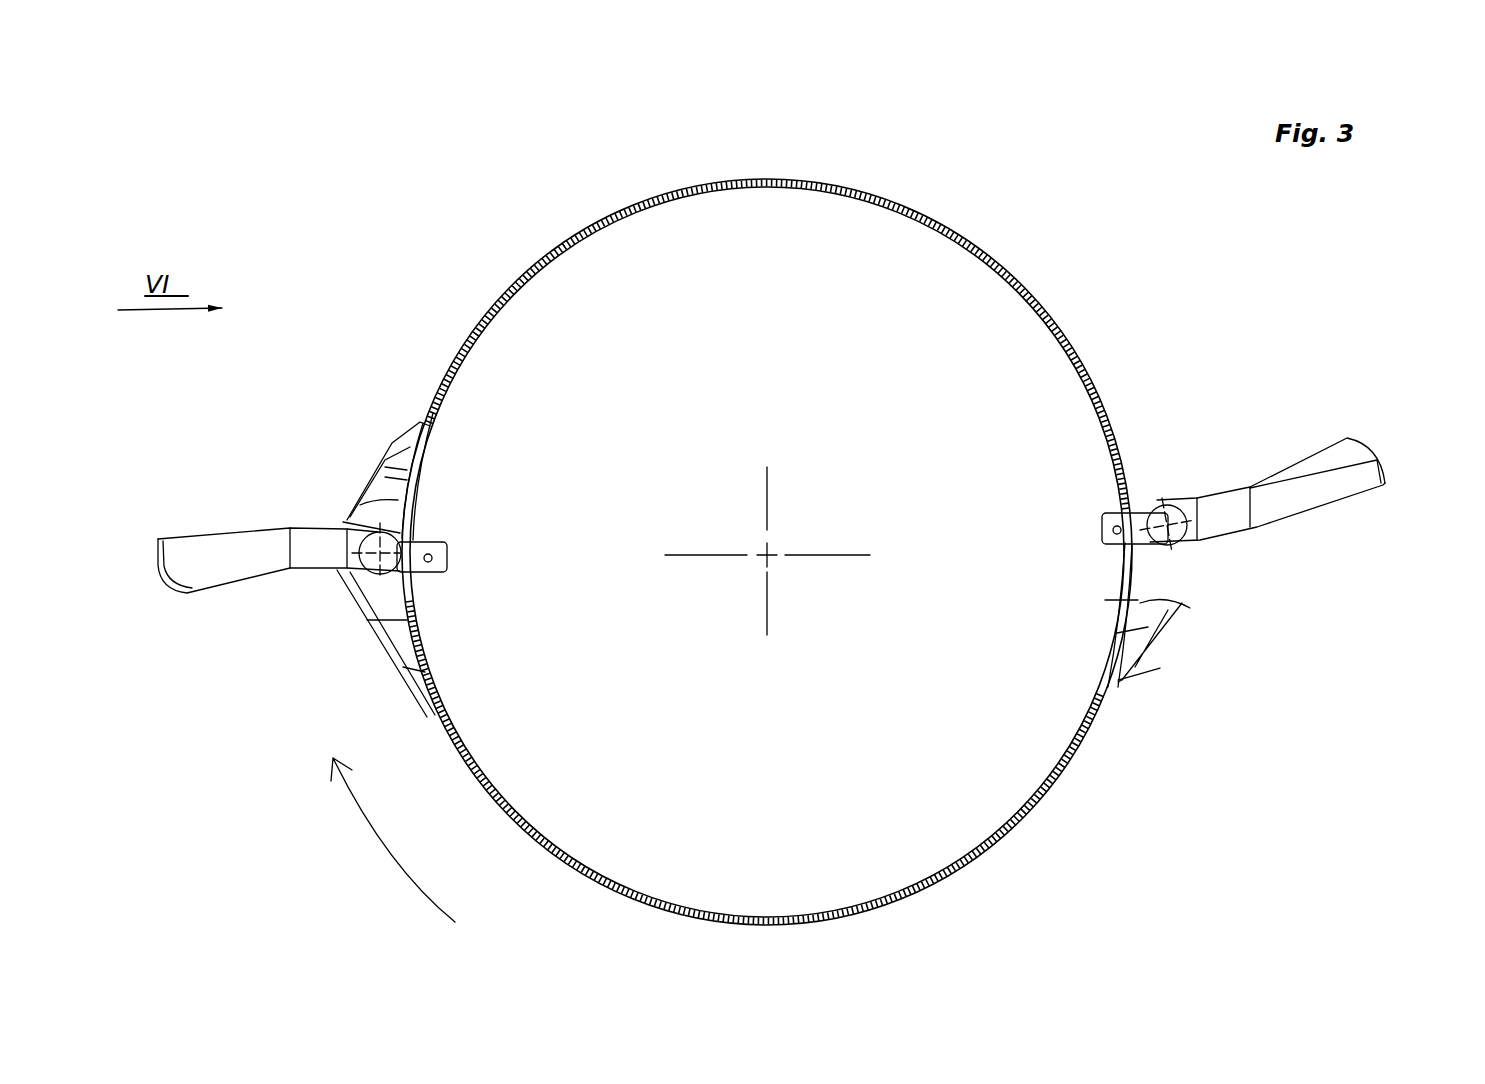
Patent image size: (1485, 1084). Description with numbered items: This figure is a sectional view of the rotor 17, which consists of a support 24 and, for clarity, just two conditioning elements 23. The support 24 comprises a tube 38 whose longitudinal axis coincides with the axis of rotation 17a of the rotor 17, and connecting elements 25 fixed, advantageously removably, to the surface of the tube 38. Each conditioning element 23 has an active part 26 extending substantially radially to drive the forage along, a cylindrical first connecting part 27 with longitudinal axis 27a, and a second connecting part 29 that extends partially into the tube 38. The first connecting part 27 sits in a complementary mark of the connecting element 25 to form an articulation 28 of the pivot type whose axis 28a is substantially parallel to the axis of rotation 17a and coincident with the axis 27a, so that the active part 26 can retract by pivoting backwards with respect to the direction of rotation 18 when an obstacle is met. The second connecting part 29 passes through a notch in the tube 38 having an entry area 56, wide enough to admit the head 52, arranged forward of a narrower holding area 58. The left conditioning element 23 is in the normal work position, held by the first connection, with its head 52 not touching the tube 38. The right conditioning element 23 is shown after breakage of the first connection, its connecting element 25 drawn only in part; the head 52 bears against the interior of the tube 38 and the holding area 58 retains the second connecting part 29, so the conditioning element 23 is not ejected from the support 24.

The rotor 17 is at (542, 212).
The axis of rotation 17a is at (770, 552).
The direction of rotation 18 is at (390, 853).
The conditioning element 23 is at (155, 512).
The support 24 is at (925, 207).
The connecting element 25 is at (395, 438).
The active part 26 is at (175, 597).
The first connecting part 27 is at (1137, 520).
The longitudinal axis 27a is at (1183, 472).
The articulation 28 is at (367, 576).
The axis of the articulation 28a is at (382, 553).
The second connecting part 29 is at (452, 560).
The tube 38 is at (1000, 252).
The head 52 is at (430, 563).
The entry area 56 is at (427, 452).
The holding area 58 is at (425, 514).